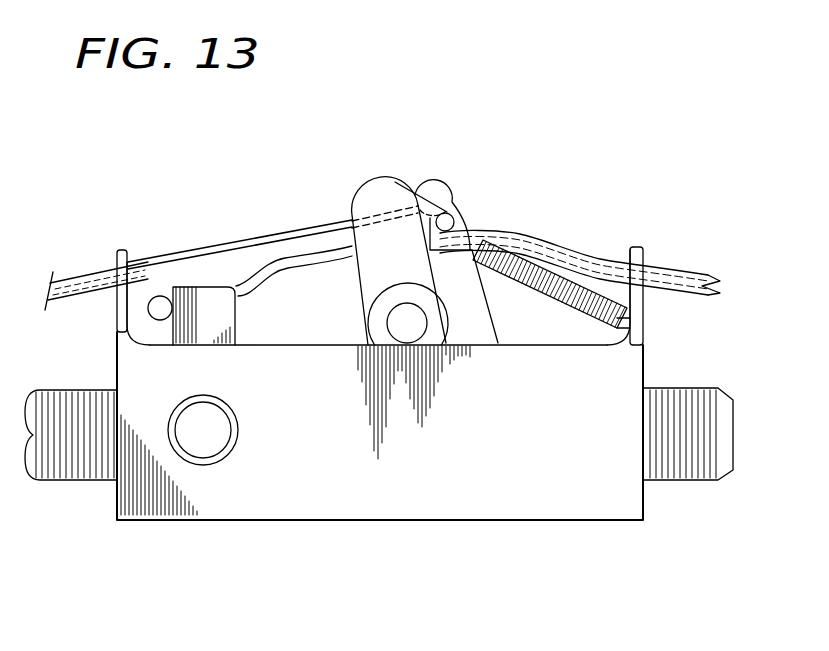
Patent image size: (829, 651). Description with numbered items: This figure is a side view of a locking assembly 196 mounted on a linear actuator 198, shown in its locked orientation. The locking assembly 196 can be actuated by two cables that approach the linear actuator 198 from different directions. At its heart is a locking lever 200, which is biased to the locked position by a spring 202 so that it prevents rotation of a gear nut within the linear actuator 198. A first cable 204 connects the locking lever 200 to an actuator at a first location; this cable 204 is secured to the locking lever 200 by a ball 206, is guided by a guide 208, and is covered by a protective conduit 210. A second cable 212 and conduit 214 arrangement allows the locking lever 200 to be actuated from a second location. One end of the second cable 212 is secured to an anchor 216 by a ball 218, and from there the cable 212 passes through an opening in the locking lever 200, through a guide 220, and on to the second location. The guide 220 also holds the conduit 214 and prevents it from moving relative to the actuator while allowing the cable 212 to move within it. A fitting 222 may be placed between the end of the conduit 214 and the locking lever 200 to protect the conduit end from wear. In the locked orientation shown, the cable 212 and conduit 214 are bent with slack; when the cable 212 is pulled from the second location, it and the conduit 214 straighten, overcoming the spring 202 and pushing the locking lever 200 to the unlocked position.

The locking assembly 196 is at (575, 90).
The linear actuator 198 is at (340, 528).
The locking lever 200 is at (375, 176).
The spring 202 is at (583, 307).
The first cable 204 is at (222, 246).
The ball 206 is at (440, 178).
The guide 208 is at (124, 250).
The conduit 210 is at (85, 275).
The second cable 212 is at (655, 268).
The conduit 214 is at (700, 275).
The anchor 216 is at (238, 332).
The ball 218 is at (160, 312).
The guide 220 is at (634, 247).
The fitting 222 is at (452, 222).